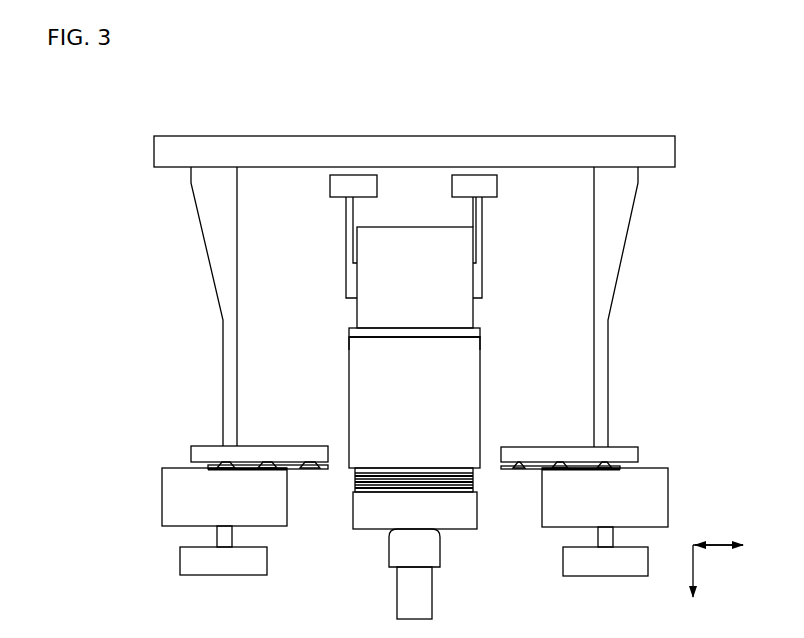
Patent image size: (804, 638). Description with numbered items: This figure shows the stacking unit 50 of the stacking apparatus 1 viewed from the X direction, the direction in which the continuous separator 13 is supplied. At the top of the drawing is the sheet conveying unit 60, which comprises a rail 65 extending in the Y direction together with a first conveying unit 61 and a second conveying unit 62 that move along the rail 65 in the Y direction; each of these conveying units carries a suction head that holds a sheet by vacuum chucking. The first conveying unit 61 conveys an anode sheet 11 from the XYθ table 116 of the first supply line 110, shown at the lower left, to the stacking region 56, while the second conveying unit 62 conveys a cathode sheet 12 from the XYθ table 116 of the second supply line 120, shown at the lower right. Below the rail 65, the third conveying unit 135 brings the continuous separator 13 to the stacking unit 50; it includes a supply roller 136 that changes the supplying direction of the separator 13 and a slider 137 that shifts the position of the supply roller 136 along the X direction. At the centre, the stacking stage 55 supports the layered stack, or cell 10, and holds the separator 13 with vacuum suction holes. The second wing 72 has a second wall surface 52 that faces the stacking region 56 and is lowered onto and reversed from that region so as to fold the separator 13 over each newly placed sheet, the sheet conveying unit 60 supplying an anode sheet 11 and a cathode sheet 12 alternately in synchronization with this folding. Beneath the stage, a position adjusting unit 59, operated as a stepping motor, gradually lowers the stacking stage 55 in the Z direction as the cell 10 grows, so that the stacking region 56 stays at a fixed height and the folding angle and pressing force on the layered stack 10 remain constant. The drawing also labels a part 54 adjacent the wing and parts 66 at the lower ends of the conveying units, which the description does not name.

The stacking apparatus 1 is at (172, 255).
The cell 10 is at (355, 487).
The anode sheet 11 is at (312, 472).
The cathode sheet 12 is at (527, 471).
The separator 13 is at (397, 248).
The stacking unit 50 is at (507, 372).
The second wall surface 52 is at (462, 396).
The mounting plate 54 is at (445, 331).
The stacking stage 55 is at (487, 537).
The stacking region 56 is at (478, 477).
The position adjusting unit 59 is at (430, 556).
The sheet conveying unit 60 is at (493, 107).
The first conveying unit 61 is at (227, 334).
The second conveying unit 62 is at (602, 376).
The rail 65 is at (373, 150).
The foot plate 66 is at (278, 453).
The second wing 72 is at (467, 345).
The first supply line 110 is at (152, 460).
The XYθ table 116 is at (167, 494).
The second supply line 120 is at (686, 460).
The third conveying unit 135 is at (497, 240).
The supply roller 136 is at (352, 272).
The slider 137 is at (333, 190).